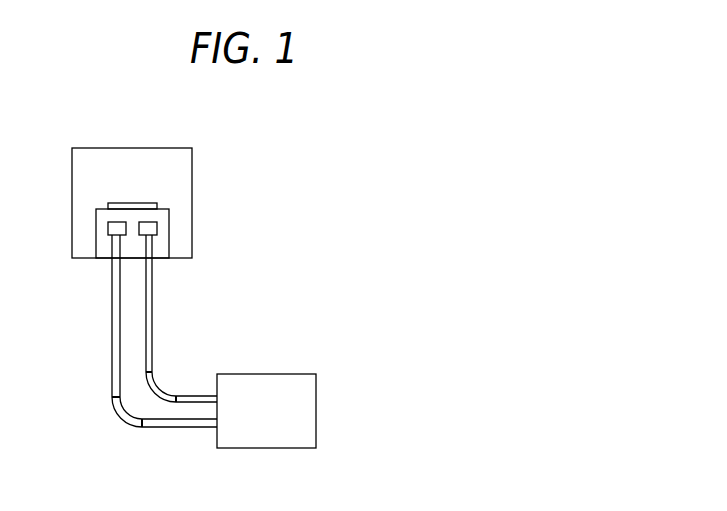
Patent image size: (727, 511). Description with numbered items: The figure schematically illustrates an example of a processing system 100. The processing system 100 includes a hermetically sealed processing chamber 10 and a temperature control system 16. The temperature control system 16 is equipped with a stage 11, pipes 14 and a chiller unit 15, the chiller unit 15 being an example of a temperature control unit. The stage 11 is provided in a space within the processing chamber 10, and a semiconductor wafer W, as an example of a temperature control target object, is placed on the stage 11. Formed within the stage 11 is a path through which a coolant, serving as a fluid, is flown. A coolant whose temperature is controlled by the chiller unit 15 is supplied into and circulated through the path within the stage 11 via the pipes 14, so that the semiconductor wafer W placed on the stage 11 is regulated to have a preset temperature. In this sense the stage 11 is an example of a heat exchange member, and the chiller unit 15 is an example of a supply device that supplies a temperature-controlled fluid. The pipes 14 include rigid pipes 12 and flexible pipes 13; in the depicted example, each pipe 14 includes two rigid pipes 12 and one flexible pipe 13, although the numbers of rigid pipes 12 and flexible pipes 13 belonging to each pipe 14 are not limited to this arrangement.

The processing system 100 is at (328, 139).
The processing chamber 10 is at (156, 148).
The semiconductor wafer W is at (138, 203).
The stage 11 is at (157, 233).
The rigid pipes 12 is at (121, 280).
The flexible pipe 13 is at (115, 402).
The pipes 14 is at (296, 260).
The chiller unit 15 is at (301, 374).
The temperature control system 16 is at (345, 233).